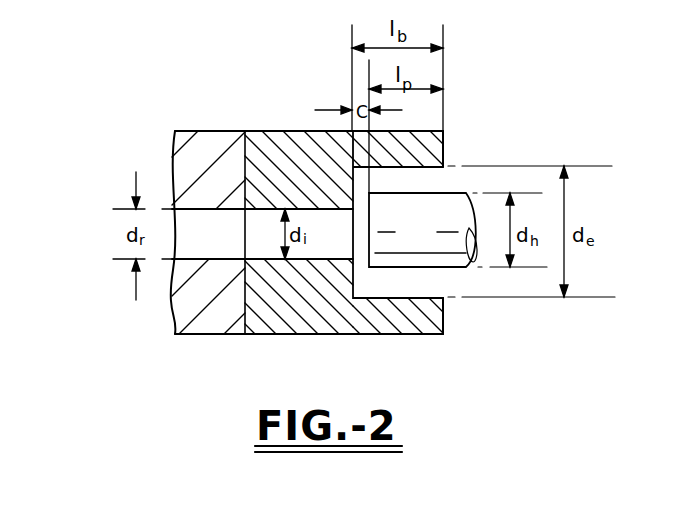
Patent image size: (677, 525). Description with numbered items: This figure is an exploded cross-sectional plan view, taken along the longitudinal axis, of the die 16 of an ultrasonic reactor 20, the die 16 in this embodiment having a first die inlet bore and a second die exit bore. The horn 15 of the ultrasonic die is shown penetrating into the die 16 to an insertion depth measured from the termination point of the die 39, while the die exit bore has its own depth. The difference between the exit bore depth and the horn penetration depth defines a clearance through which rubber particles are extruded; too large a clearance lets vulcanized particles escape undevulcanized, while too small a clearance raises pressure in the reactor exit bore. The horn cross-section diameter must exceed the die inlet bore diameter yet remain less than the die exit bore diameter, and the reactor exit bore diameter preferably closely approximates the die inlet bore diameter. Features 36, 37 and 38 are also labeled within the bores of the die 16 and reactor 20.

The horn 15 is at (432, 245).
The die 16 is at (434, 341).
The reactor 20 is at (208, 124).
The bore 36 is at (197, 215).
The counterbore 37 is at (424, 168).
The bore section 38 is at (268, 220).
The termination point of die 39 is at (445, 317).